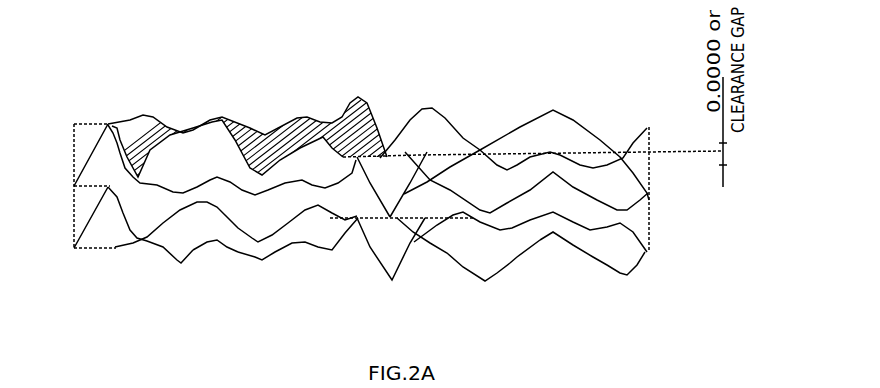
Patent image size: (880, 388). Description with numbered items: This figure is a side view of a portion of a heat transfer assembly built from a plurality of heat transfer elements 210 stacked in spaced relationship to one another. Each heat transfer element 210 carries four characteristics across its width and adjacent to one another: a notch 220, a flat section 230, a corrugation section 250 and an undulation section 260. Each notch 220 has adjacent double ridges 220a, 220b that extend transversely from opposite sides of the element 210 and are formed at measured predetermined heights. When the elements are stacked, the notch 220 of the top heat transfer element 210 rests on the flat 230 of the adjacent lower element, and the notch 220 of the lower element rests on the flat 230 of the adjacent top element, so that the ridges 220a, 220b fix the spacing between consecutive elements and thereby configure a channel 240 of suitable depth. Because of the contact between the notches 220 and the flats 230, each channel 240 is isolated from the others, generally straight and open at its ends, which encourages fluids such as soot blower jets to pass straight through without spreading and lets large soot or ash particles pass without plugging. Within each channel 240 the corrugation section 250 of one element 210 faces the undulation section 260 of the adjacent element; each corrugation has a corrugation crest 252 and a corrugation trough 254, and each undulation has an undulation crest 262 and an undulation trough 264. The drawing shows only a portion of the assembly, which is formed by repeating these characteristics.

The heat transfer element 210 is at (565, 203).
The notch 220 is at (518, 196).
The ridge 220a is at (357, 161).
The ridge 220b is at (392, 221).
The flat section 230 is at (100, 124).
The channel 240 is at (221, 131).
The corrugation section 250 is at (530, 255).
The corrugation crest 252 is at (557, 234).
The corrugation trough 254 is at (486, 283).
The undulation section 260 is at (262, 260).
The undulation crest 262 is at (218, 242).
The undulation trough 264 is at (180, 263).